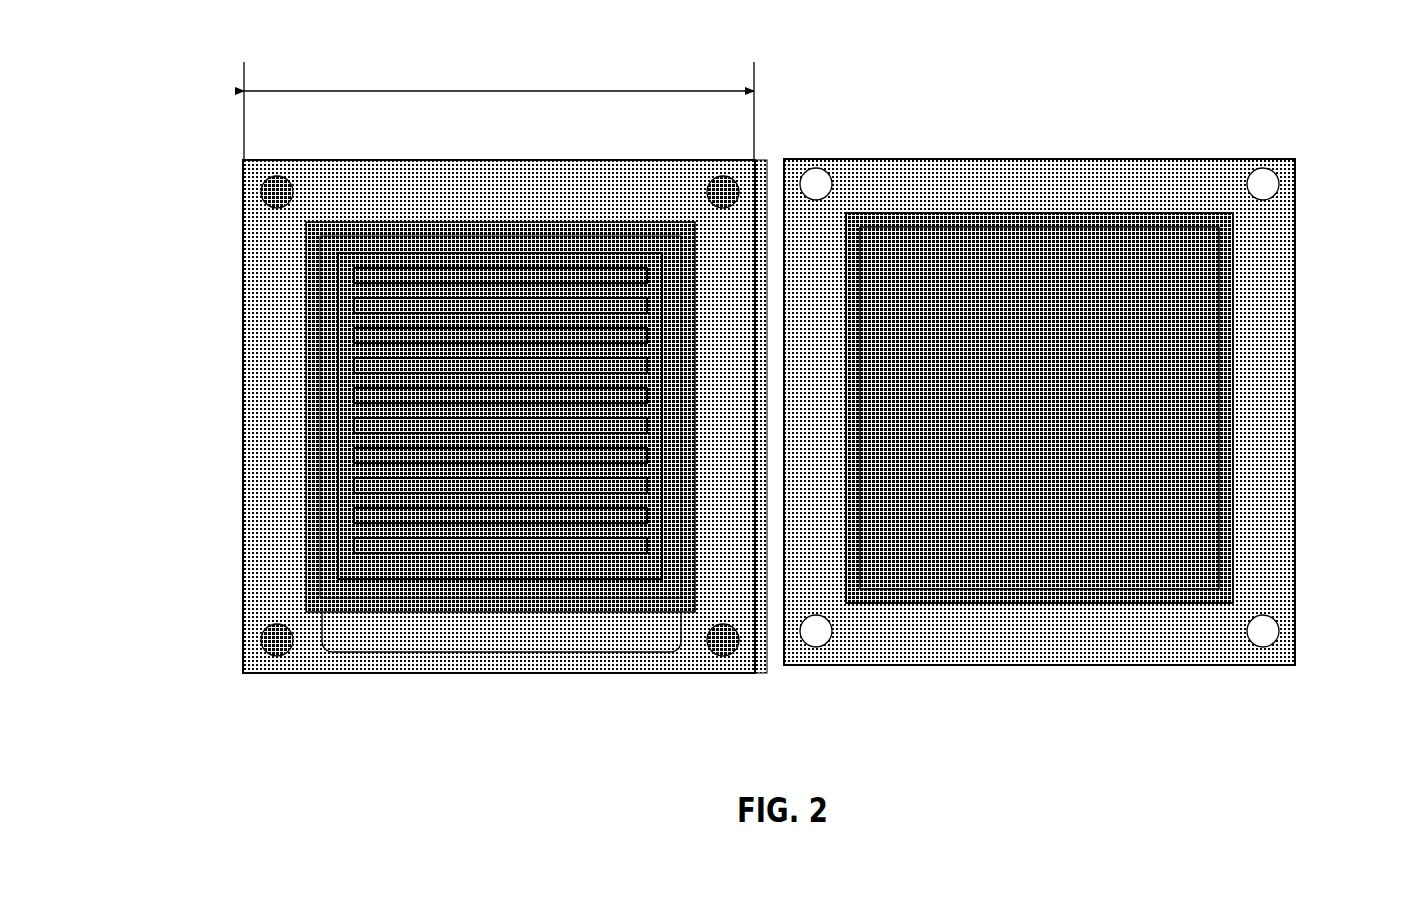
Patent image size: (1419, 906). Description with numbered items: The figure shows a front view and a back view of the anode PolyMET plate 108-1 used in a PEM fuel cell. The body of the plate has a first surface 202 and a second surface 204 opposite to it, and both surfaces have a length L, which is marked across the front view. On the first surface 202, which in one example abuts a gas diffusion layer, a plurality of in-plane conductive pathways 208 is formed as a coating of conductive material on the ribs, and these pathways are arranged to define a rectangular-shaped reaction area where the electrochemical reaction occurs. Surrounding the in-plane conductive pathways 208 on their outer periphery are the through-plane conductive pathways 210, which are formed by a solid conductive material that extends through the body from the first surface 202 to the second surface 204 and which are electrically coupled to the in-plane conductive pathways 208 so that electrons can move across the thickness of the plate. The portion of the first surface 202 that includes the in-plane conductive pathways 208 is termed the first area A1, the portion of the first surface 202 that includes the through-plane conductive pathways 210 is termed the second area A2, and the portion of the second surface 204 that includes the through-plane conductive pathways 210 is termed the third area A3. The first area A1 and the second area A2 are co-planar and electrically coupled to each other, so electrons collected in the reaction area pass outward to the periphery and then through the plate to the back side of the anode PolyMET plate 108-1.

The anode PolyMET plate 108-1 is at (146, 25).
The first surface 202 is at (263, 325).
The second surface 204 is at (1275, 330).
The in-plane conductive pathways 208 is at (522, 223).
The through-plane conductive pathways 210 is at (390, 223).
The first area A1 is at (330, 514).
The second area A2 is at (340, 455).
The third area A3 is at (1099, 215).
The length L is at (499, 111).